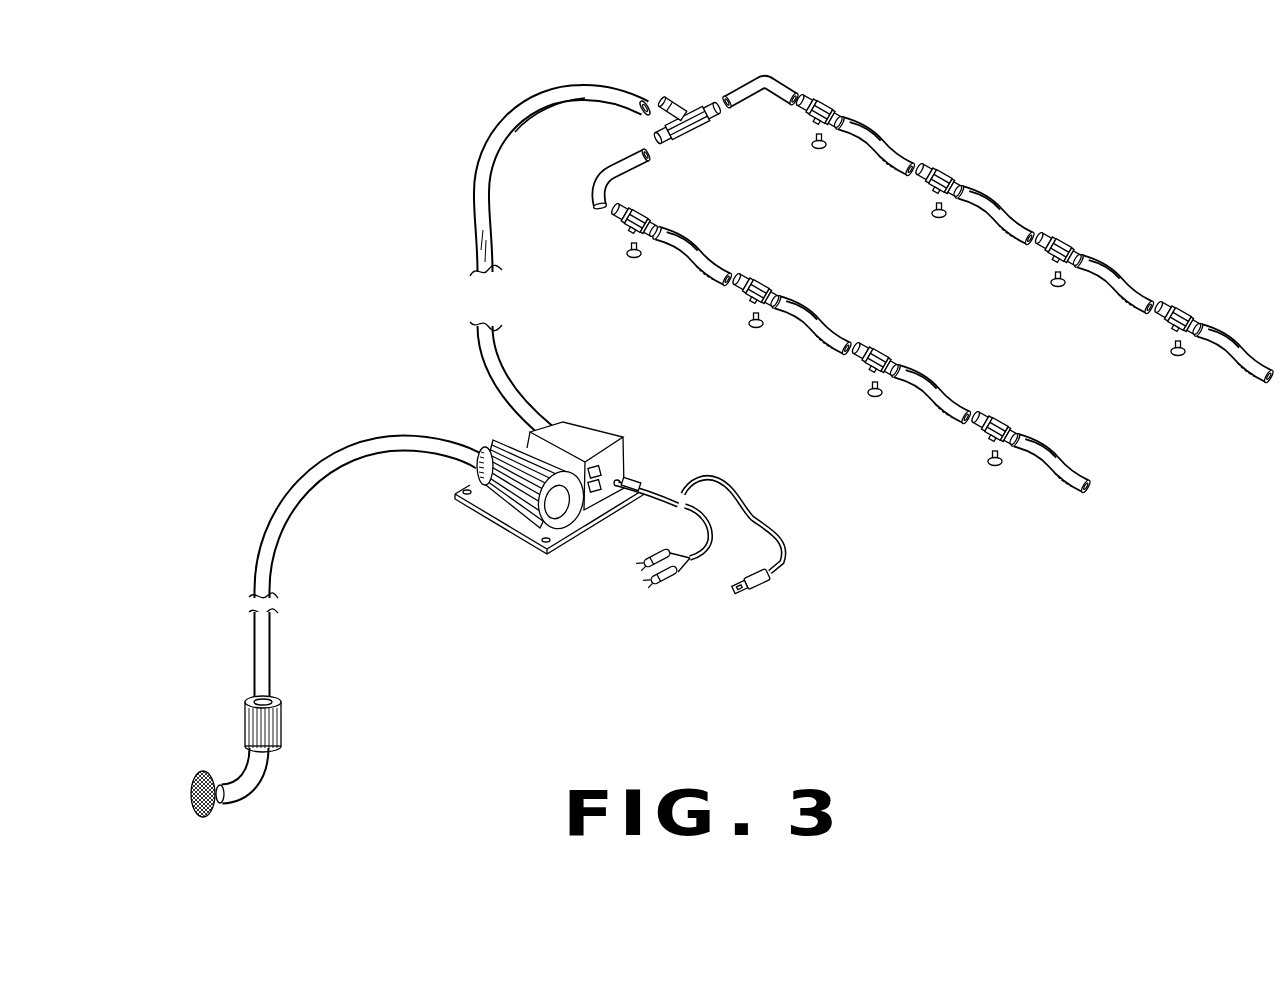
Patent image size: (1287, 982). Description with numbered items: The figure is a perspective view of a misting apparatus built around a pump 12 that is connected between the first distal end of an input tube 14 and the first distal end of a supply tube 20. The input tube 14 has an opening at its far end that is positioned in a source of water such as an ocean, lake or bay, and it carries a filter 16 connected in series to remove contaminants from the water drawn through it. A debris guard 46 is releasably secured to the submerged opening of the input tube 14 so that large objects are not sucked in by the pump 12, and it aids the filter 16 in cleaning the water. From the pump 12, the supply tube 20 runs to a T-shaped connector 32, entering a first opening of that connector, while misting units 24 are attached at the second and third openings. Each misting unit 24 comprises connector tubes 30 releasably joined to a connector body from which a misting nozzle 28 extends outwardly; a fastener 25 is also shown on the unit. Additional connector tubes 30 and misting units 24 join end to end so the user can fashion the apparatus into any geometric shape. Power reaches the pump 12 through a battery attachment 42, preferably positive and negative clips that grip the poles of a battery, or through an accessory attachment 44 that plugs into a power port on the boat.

The pump 12 is at (517, 487).
The input tube 14 is at (262, 643).
The filter 16 is at (277, 722).
The supply tube 20 is at (508, 122).
The misting unit 24 is at (821, 102).
The fastener 25 is at (805, 100).
The nozzle 28 is at (817, 147).
The connector tubes 30 is at (880, 140).
The T-shaped connector 32 is at (697, 108).
The battery attachment 42 is at (645, 567).
The accessory attachment 44 is at (738, 596).
The debris guard 46 is at (198, 815).